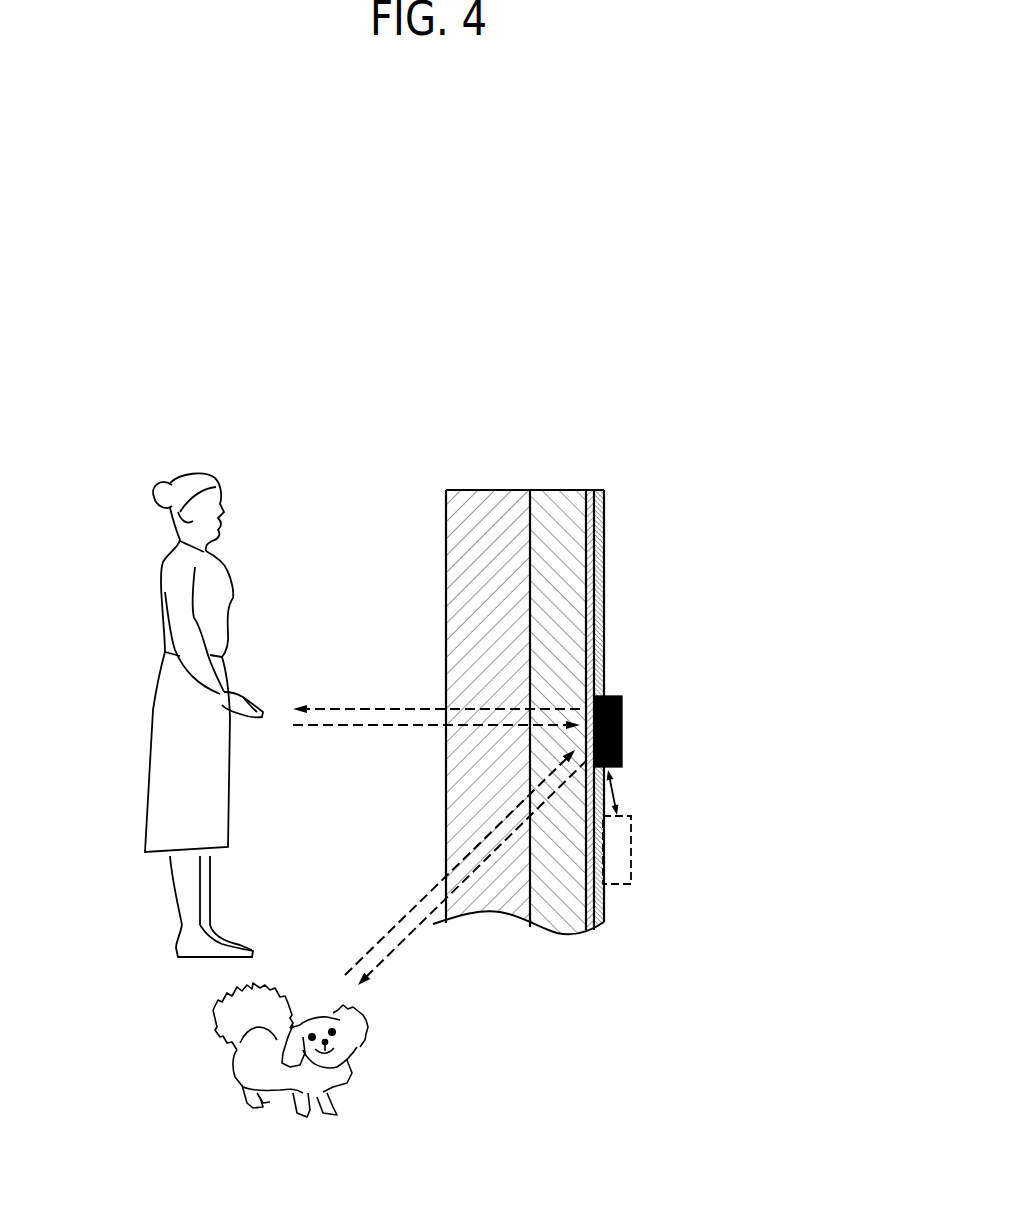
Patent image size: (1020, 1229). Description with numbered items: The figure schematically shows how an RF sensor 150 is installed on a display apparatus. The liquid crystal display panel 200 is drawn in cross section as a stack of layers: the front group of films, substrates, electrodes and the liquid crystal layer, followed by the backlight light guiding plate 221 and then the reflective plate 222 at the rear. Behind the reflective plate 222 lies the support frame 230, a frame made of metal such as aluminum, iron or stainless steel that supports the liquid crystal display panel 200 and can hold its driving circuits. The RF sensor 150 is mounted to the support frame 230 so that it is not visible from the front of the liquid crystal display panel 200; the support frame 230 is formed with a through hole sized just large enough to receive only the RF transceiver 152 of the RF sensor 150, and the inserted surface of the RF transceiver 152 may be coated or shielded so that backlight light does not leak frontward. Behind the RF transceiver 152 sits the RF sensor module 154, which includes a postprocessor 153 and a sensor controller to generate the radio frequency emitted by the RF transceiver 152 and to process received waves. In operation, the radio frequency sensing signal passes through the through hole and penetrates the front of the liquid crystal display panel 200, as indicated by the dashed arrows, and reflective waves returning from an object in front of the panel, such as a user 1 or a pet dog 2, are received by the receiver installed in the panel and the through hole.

The user 1 is at (158, 575).
The pet dog 2 is at (232, 1058).
The liquid crystal display panel 200 is at (650, 403).
The backlight light guiding plate 221 is at (550, 500).
The reflective plate 222 is at (592, 500).
The support frame 230 is at (600, 490).
The RF sensor 150 is at (732, 723).
The RF transceiver 152 is at (622, 723).
The postprocessor 153 is at (615, 785).
The RF sensor module 154 is at (630, 850).